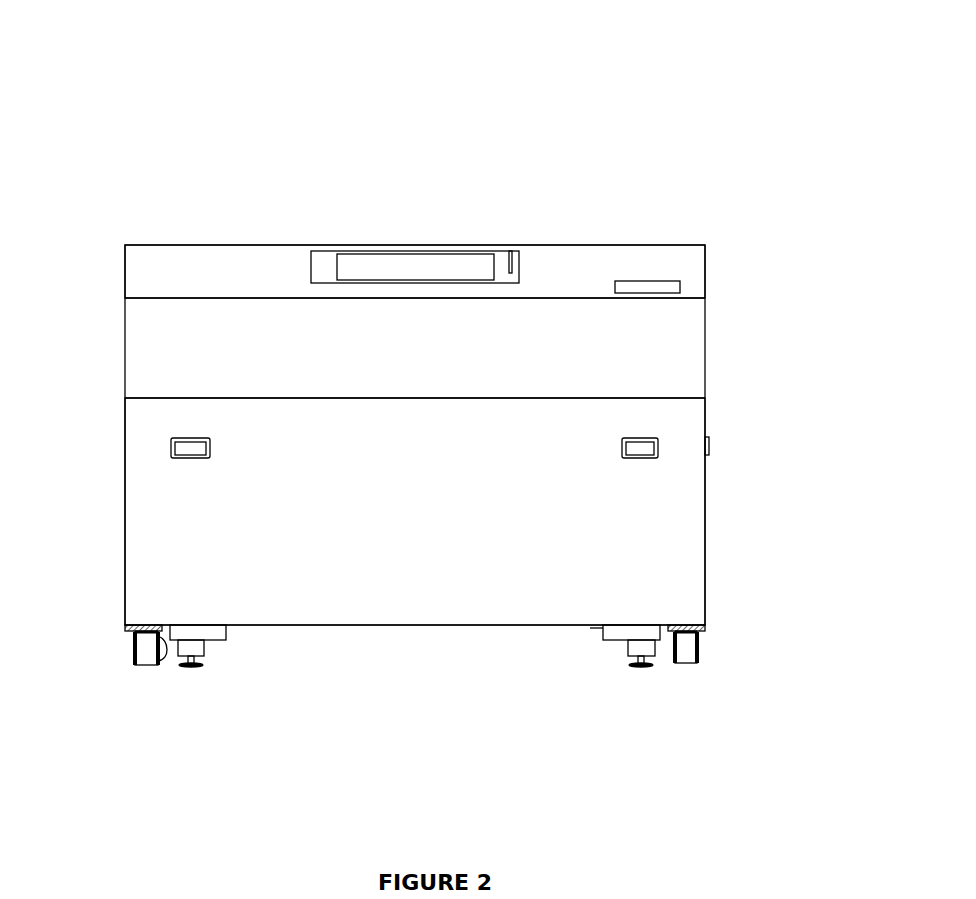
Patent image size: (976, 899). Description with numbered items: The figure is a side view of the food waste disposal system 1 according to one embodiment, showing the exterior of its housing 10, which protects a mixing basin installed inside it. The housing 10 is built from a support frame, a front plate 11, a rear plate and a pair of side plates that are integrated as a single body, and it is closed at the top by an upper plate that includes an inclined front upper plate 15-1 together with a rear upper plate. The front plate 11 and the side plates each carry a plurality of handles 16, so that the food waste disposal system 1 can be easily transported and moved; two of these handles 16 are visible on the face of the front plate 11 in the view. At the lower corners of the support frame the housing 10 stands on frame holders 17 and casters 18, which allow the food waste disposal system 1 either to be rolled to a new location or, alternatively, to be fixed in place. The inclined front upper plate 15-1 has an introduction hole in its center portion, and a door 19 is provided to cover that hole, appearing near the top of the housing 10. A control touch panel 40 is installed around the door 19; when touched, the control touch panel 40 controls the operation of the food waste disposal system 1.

The food waste disposal system 1 is at (76, 98).
The housing 10 is at (560, 246).
The front plate 11 is at (654, 566).
The inclined front upper plate 15-1 is at (237, 275).
The handles 16 is at (640, 448).
The frame holders 17 is at (205, 632).
The casters 18 is at (146, 655).
The door 19 is at (328, 267).
The control touch panel 40 is at (665, 284).